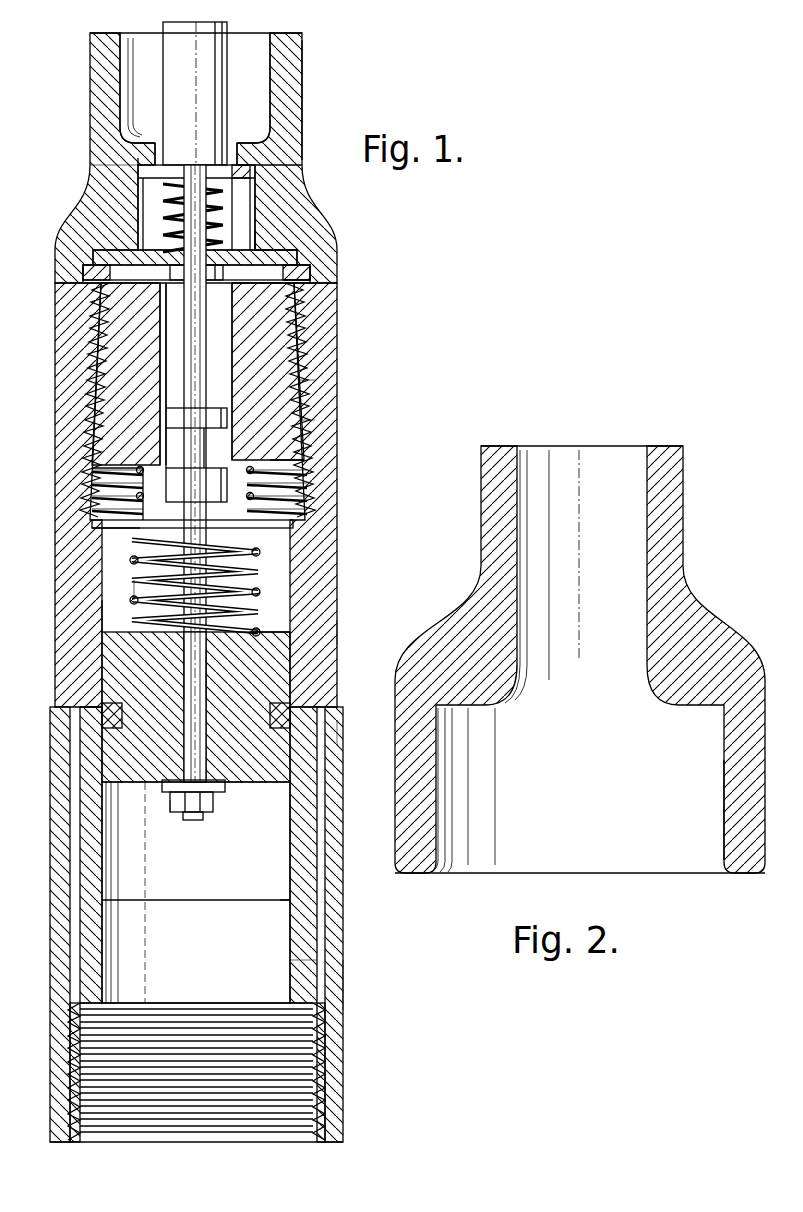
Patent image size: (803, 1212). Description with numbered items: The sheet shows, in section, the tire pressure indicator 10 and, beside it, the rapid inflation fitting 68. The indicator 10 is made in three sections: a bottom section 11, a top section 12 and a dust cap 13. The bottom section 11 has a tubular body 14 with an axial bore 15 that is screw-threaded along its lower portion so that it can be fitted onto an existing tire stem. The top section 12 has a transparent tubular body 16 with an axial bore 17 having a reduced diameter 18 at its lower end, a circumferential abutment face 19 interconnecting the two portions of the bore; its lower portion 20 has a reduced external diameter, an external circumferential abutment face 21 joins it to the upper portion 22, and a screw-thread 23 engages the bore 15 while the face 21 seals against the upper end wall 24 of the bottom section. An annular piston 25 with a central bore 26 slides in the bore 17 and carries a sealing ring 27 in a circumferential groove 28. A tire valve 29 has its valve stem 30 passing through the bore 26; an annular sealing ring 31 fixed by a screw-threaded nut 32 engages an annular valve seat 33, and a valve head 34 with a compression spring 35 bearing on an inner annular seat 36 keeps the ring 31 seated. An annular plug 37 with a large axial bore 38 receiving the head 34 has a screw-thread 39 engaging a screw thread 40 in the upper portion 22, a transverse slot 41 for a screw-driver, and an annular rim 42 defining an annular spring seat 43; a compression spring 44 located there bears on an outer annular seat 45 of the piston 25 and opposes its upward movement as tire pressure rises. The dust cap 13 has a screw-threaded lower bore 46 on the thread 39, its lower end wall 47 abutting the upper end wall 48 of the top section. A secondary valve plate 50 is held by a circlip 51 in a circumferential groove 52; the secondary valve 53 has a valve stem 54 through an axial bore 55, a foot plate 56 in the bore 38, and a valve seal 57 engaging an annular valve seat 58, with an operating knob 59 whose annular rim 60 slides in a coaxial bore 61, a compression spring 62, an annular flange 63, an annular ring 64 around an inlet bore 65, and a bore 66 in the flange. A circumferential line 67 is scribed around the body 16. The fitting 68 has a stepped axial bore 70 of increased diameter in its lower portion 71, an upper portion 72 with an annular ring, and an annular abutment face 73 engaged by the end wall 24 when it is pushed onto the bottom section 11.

In FIG. 1, the indicator 10 is at (390, 280).
In FIG. 1, the bottom section 11 is at (361, 993).
In FIG. 1, the top section 12 is at (351, 558).
In FIG. 1, the dust cap 13 is at (349, 355).
In FIG. 1, the tubular body 14 is at (333, 1008).
In FIG. 1, the axial bore / screw-thread 15 is at (228, 1120).
In FIG. 1, the tubular body 16 is at (300, 583).
In FIG. 1, the axial bore 17 is at (265, 837).
In FIG. 1, the reduced diameter 18 is at (253, 933).
In FIG. 1, the chamber step 19 is at (288, 898).
In FIG. 1, the lower portion 20 is at (302, 862).
In FIG. 1, the external circumferential abutment face 21 is at (330, 712).
In FIG. 1, the upper portion 22 is at (327, 477).
In FIG. 1, the screw-thread 23 is at (312, 965).
In FIG. 1, the upper end wall 24 is at (335, 735).
In FIG. 1, the annular piston 25 is at (120, 648).
In FIG. 1, the central bore 26 is at (181, 657).
In FIG. 1, the sealing ring 27 is at (97, 704).
In FIG. 1, the circumferential groove 28 is at (62, 745).
In FIG. 1, the tire valve 29 is at (204, 672).
In FIG. 1, the valve stem 30 is at (292, 703).
In FIG. 1, the annular sealing ring 31 is at (222, 790).
In FIG. 1, the screw-threaded nut 32 is at (263, 808).
In FIG. 1, the annular valve seat 33 is at (155, 780).
In FIG. 1, the valve head 34 is at (175, 480).
In FIG. 1, the compression spring 35 is at (265, 603).
In FIG. 1, the inner annular seat 36 is at (240, 640).
In FIG. 1, the annular plug 37 is at (99, 357).
In FIG. 1, the large axial bore 38 is at (172, 418).
In FIG. 1, the screw-thread 39 is at (297, 450).
In FIG. 1, the screw thread 40 is at (283, 516).
In FIG. 1, the transverse slot 41 is at (301, 289).
In FIG. 1, the annular rim 42 is at (137, 500).
In FIG. 1, the annular spring seat 43 is at (150, 488).
In FIG. 1, the compression spring 44 is at (138, 528).
In FIG. 1, the outer annular seat 45 is at (118, 630).
In FIG. 1, the screw-threaded lower bore 46 is at (310, 325).
In FIG. 1, the lower end wall 47 is at (312, 392).
In FIG. 1, the upper end wall 48 is at (300, 426).
In FIG. 1, the secondary valve plate 50 is at (250, 238).
In FIG. 1, the circlip 51 is at (290, 257).
In FIG. 1, the circumferential groove 52 is at (305, 272).
In FIG. 1, the secondary valve 53 is at (173, 310).
In FIG. 1, the valve stem 54 is at (192, 330).
In FIG. 1, the axial bore 55 is at (100, 256).
In FIG. 1, the foot plate 56 is at (160, 378).
In FIG. 1, the valve seal 57 is at (92, 272).
In FIG. 1, the annular valve seat 58 is at (303, 167).
In FIG. 1, the operating knob 59 is at (215, 103).
In FIG. 1, the annular rim 60 is at (150, 176).
In FIG. 1, the coaxial bore 61 is at (247, 230).
In FIG. 1, the compression spring 62 is at (168, 200).
In FIG. 1, the annular flange 63 is at (240, 155).
In FIG. 1, the annular ring 64 is at (293, 54).
In FIG. 1, the inlet bore 65 is at (250, 81).
In FIG. 1, the bore 66 is at (140, 164).
In FIG. 1, the circumferential line 67 is at (336, 635).
In FIG. 2, the rapid inflation fitting 68 is at (732, 572).
In FIG. 2, the stepped axial bore 70 is at (602, 776).
In FIG. 2, the lower portion 71 is at (738, 815).
In FIG. 2, the upper portion 72 is at (674, 482).
In FIG. 2, the annular abutment face 73 is at (476, 707).